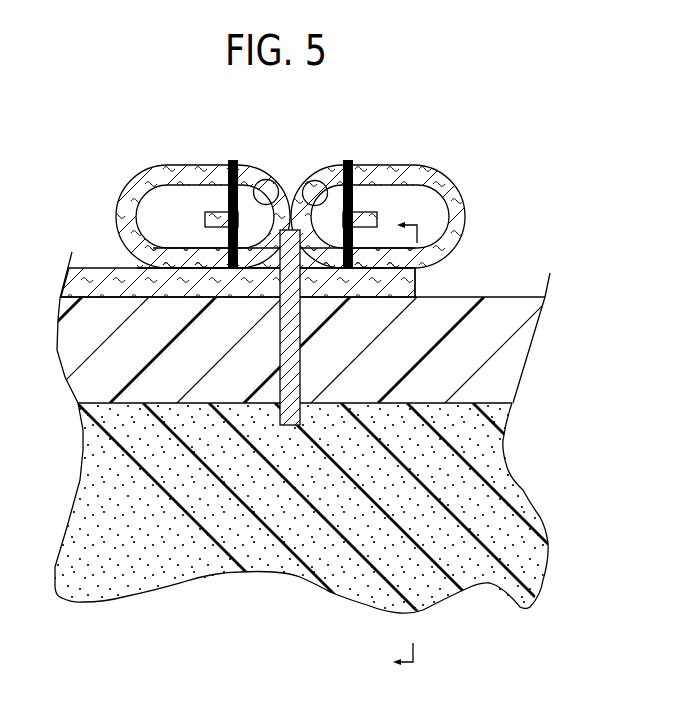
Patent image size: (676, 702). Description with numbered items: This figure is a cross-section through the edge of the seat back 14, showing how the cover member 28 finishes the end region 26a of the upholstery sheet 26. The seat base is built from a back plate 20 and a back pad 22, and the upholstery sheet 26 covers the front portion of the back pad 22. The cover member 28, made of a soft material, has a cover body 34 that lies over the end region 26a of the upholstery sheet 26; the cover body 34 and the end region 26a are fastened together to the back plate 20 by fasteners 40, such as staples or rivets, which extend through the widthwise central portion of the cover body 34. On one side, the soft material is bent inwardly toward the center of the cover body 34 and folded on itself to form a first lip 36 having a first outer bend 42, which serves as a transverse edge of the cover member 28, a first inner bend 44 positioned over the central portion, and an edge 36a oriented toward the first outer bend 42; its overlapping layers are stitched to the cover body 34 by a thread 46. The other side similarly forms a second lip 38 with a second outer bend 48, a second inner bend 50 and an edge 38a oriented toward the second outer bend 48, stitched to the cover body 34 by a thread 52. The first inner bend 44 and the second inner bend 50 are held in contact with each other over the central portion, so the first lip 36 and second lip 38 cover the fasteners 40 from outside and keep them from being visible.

The seat back 14 is at (480, 106).
The back plate 20 is at (513, 363).
The back pad 22 is at (490, 468).
The upholstery sheet 26 is at (253, 281).
The end region of upholstery sheet 26a is at (417, 287).
The cover member 28 is at (292, 193).
The cover body 34 is at (201, 257).
The first lip 36 is at (402, 193).
The edge of first lip 36a is at (392, 218).
The second lip 38 is at (178, 193).
The edge of second lip 38a is at (204, 217).
The fastener 40 is at (289, 382).
The first outer bend 42 is at (466, 213).
The first inner bend 44 is at (323, 178).
The thread 46 is at (347, 160).
The second outer bend 48 is at (116, 212).
The second inner bend 50 is at (256, 183).
The thread 52 is at (234, 160).